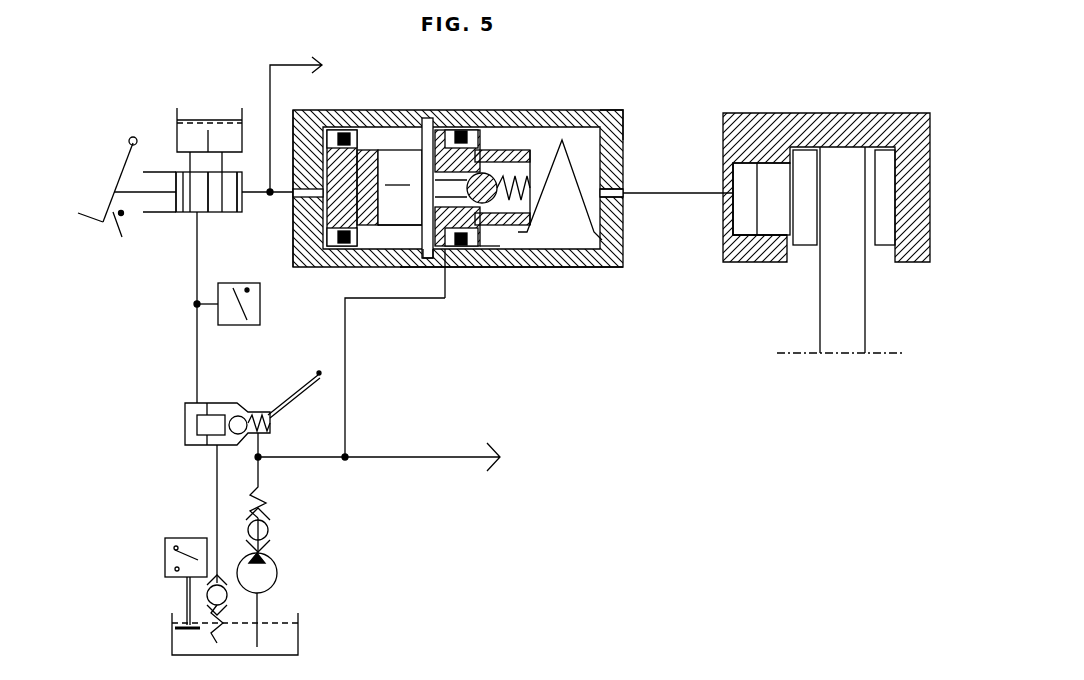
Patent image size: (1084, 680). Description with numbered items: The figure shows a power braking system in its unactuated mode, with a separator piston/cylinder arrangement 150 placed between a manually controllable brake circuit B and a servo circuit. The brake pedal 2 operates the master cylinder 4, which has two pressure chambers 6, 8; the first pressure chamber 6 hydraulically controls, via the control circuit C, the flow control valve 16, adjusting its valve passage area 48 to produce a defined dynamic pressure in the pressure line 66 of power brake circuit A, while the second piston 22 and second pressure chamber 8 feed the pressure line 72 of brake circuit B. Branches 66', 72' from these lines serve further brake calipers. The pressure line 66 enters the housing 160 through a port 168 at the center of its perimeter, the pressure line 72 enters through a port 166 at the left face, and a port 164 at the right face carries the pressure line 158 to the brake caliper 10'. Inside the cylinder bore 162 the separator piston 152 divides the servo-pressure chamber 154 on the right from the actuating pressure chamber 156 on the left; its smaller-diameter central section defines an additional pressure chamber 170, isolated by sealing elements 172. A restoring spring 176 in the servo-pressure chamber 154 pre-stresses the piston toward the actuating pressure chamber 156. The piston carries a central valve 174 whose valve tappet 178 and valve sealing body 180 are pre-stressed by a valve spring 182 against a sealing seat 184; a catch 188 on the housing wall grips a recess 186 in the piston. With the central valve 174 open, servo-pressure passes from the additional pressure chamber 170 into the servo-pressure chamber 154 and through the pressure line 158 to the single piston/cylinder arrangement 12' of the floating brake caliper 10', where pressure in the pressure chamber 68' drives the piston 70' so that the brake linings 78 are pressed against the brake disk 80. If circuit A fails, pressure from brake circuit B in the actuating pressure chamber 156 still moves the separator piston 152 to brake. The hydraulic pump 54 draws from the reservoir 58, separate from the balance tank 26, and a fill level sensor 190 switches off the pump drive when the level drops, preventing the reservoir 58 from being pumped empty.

The brake pedal 2 is at (118, 167).
The master cylinder 4 is at (172, 165).
The first pressure chamber 6 is at (193, 205).
The second pressure chamber 8 is at (230, 208).
The second piston 22 is at (210, 210).
The balance tank 26 is at (195, 128).
The branch 72' is at (272, 124).
The port 166 is at (272, 197).
The pressure line 72 is at (320, 169).
The separator piston/cylinder arrangement 150 is at (608, 106).
The separator piston 152 is at (372, 247).
The servo-pressure chamber 154 is at (623, 125).
The actuating pressure chamber 156 is at (345, 128).
The pressure line 158 is at (655, 192).
The housing 160 is at (566, 260).
The cylinder bore 162 is at (560, 135).
The port 164 is at (625, 196).
The port 168 is at (450, 262).
The additional pressure chamber 170 is at (422, 115).
The sealing elements 172 is at (360, 130).
The central valve 174 is at (468, 135).
The restoring spring 176 is at (600, 238).
The valve tappet 178 is at (486, 172).
The valve sealing body 180 is at (495, 252).
The valve spring 182 is at (505, 150).
The sealing seat 184 is at (430, 255).
The recess 186 is at (400, 187).
The catch 188 is at (422, 185).
The brake caliper 10' is at (826, 159).
The piston/cylinder arrangement 12' is at (757, 274).
The pressure chamber 68' is at (704, 238).
The piston 70' is at (774, 238).
The brake linings 78 is at (885, 160).
The brake disk 80 is at (858, 312).
The flow control valve 16 is at (185, 440).
The valve passage area 48 is at (325, 375).
The hydraulic pump 54 is at (272, 577).
The reservoir 58 is at (290, 640).
The pressure line 66 is at (393, 379).
The branch 66' is at (377, 473).
The fill level sensor 190 is at (163, 545).
The power brake circuit A is at (358, 370).
The brake circuit B is at (256, 130).
The control circuit C is at (188, 345).